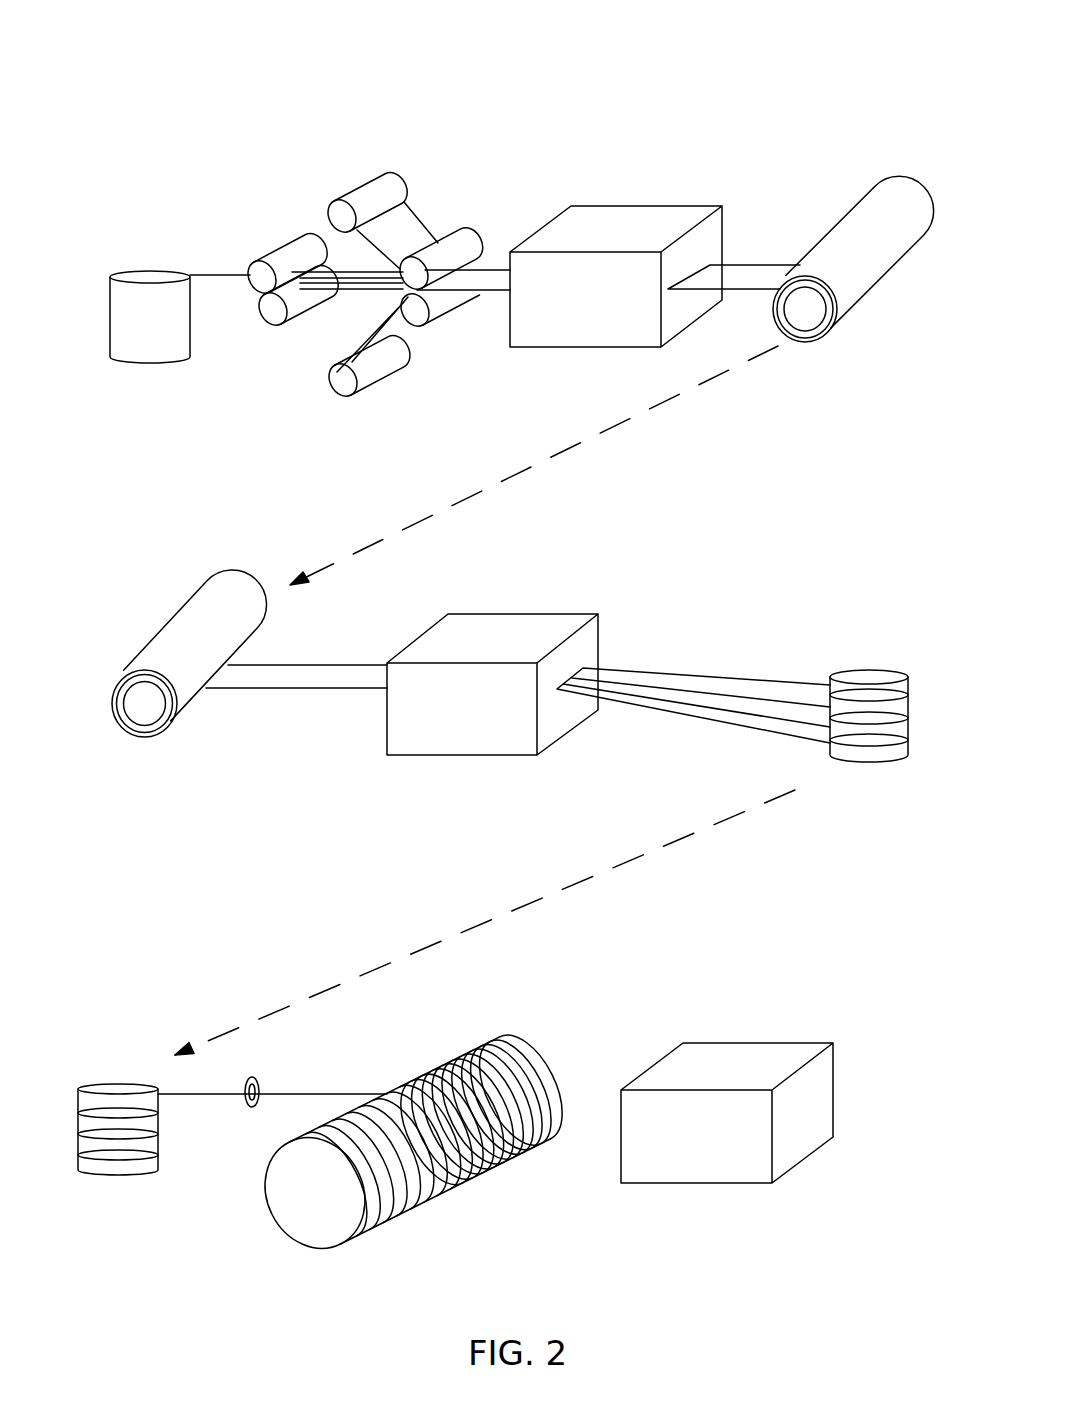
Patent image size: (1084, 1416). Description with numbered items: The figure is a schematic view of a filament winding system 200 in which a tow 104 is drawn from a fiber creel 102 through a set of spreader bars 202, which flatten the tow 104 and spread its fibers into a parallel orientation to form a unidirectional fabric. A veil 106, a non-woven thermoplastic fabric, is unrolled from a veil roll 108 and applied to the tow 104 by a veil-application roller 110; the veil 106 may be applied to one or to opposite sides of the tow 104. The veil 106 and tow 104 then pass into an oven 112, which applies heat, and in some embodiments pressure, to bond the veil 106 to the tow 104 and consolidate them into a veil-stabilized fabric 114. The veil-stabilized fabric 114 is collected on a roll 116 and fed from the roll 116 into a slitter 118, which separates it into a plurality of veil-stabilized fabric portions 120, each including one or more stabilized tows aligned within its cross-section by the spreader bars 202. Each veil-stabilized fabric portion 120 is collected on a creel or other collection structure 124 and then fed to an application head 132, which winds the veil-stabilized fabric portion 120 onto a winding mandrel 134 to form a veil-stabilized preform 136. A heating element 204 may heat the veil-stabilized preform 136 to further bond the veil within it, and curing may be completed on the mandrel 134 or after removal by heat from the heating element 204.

The filament winding system 200 is at (177, 38).
The fiber creel 102 is at (140, 272).
The tow 104 is at (212, 272).
The spreader bars 202 is at (284, 258).
The veil 106 is at (423, 215).
The veil roll 108 is at (356, 195).
The veil-application roller 110 is at (467, 224).
The oven 112 is at (622, 206).
The veil-stabilized fabric 114 is at (768, 265).
The roll 116 is at (880, 188).
The slitter 118 is at (533, 614).
The veil-stabilized fabric portion 120 is at (670, 694).
The collection structure 124 is at (870, 670).
The application head 132 is at (258, 1080).
The winding mandrel 134 is at (303, 1252).
The veil-stabilized preform 136 is at (500, 1040).
The heating element 204 is at (736, 1043).